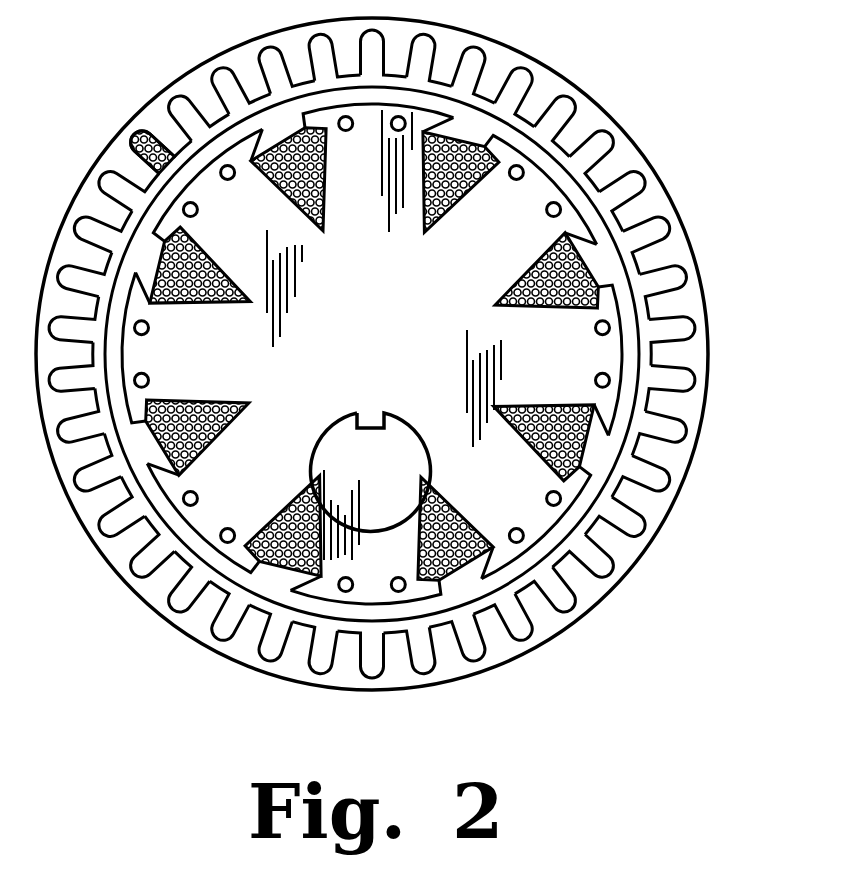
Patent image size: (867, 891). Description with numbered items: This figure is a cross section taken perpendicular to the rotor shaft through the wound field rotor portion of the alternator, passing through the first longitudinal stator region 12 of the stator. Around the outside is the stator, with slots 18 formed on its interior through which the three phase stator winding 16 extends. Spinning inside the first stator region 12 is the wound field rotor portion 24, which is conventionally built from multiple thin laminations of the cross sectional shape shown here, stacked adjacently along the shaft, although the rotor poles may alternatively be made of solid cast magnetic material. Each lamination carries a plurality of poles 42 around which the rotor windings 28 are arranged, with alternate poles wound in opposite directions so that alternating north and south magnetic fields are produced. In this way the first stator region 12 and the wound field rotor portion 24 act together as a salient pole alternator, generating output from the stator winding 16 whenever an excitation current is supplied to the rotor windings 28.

The first longitudinal stator region 12 is at (625, 157).
The three phase stator winding 16 is at (148, 128).
The slots 18 is at (236, 72).
The wound field rotor portion 24 is at (471, 297).
The rotor windings 28 is at (465, 138).
The poles 42 is at (251, 232).